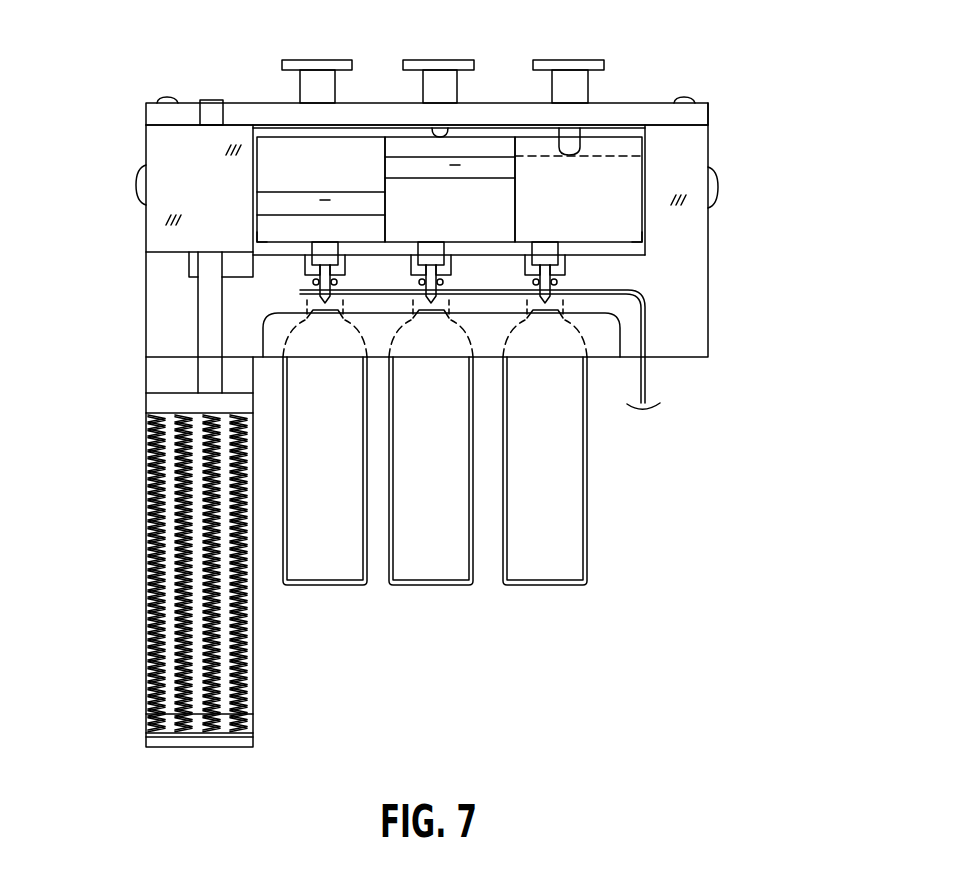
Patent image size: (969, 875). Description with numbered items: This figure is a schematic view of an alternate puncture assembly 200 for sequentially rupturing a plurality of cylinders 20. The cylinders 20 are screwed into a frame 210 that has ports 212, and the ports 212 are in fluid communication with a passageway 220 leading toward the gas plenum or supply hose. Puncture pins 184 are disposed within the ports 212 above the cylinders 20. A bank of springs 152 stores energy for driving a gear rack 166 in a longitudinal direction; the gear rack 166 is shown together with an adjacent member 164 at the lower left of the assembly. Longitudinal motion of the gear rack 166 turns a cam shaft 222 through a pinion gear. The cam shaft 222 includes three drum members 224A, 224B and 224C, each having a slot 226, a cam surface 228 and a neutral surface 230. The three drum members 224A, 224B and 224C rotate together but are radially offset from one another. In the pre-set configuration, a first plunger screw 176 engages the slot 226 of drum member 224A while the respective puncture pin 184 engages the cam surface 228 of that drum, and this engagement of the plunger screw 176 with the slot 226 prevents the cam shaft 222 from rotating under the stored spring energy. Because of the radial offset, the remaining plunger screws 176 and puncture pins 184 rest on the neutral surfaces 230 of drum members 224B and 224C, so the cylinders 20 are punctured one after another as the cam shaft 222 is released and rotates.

The puncture assembly 200 is at (157, 58).
The plunger screw 176 is at (323, 60).
The slot 226 is at (325, 205).
The cam shaft 222 is at (720, 175).
The drum member 224A is at (572, 190).
The drum member 224B is at (473, 219).
The drum member 224C is at (320, 172).
The puncture pin 184 is at (540, 256).
The port 212 is at (572, 292).
The cam surface 228 is at (630, 243).
The neutral surface 230 is at (278, 243).
The frame 210 is at (686, 337).
The gear rack 166 is at (210, 320).
The mounting plate 164 is at (148, 405).
The passageway 220 is at (646, 396).
The springs 152 is at (245, 672).
The cylinder 20 is at (339, 564).